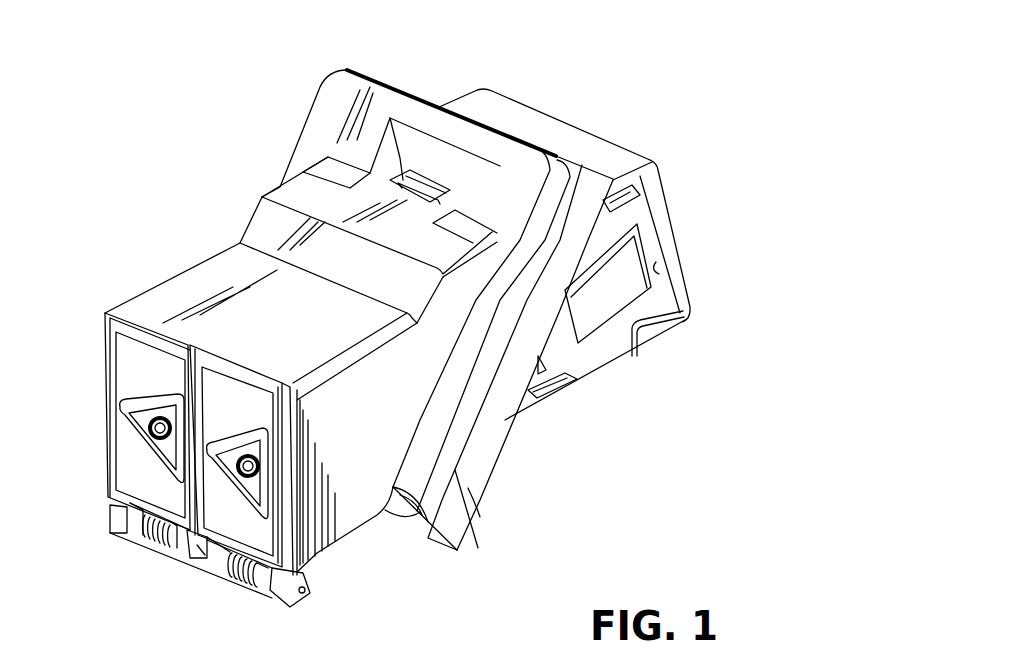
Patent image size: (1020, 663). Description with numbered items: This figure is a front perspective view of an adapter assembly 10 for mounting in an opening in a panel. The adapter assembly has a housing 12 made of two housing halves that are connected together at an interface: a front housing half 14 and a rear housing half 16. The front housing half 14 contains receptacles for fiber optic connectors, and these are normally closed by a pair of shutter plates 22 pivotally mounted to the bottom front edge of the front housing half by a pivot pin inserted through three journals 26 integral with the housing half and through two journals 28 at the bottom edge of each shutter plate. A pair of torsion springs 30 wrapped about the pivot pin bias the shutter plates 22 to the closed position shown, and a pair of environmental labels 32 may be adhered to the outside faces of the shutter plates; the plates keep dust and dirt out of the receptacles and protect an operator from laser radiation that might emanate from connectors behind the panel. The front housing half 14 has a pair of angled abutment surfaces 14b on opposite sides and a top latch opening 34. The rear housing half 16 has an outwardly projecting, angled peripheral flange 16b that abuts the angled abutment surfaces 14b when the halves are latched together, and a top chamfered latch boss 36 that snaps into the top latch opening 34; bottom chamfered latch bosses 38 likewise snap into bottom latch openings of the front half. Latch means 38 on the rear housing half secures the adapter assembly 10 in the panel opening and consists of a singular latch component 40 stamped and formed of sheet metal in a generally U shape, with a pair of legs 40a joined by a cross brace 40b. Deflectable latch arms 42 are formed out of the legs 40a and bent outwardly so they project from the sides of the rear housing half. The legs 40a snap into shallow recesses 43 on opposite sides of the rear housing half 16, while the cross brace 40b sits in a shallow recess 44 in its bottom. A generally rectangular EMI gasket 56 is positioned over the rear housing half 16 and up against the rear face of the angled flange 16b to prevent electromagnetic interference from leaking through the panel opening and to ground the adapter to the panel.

The adapter assembly 10 is at (603, 133).
The housing 12 is at (284, 193).
The front housing half 14 is at (232, 275).
The angled abutment surfaces 14b is at (417, 507).
The rear housing half 16 is at (528, 120).
The peripheral flange 16b is at (467, 497).
The shutter plates 22 is at (107, 378).
The journals 26 is at (123, 527).
The journals 28 is at (137, 540).
The torsion springs 30 is at (153, 540).
The environmental labels 32 is at (227, 503).
The top latch opening 34 is at (403, 177).
The top chamfered latch boss 36 is at (430, 197).
The latch means 38 is at (655, 232).
The latch component 40 is at (655, 303).
The legs 40a is at (640, 197).
The cross brace 40b is at (597, 373).
The deflectable latch arms 42 is at (570, 300).
The shallow recesses 43 is at (662, 272).
The shallow recess 44 is at (637, 357).
The EMI gasket 56 is at (470, 490).